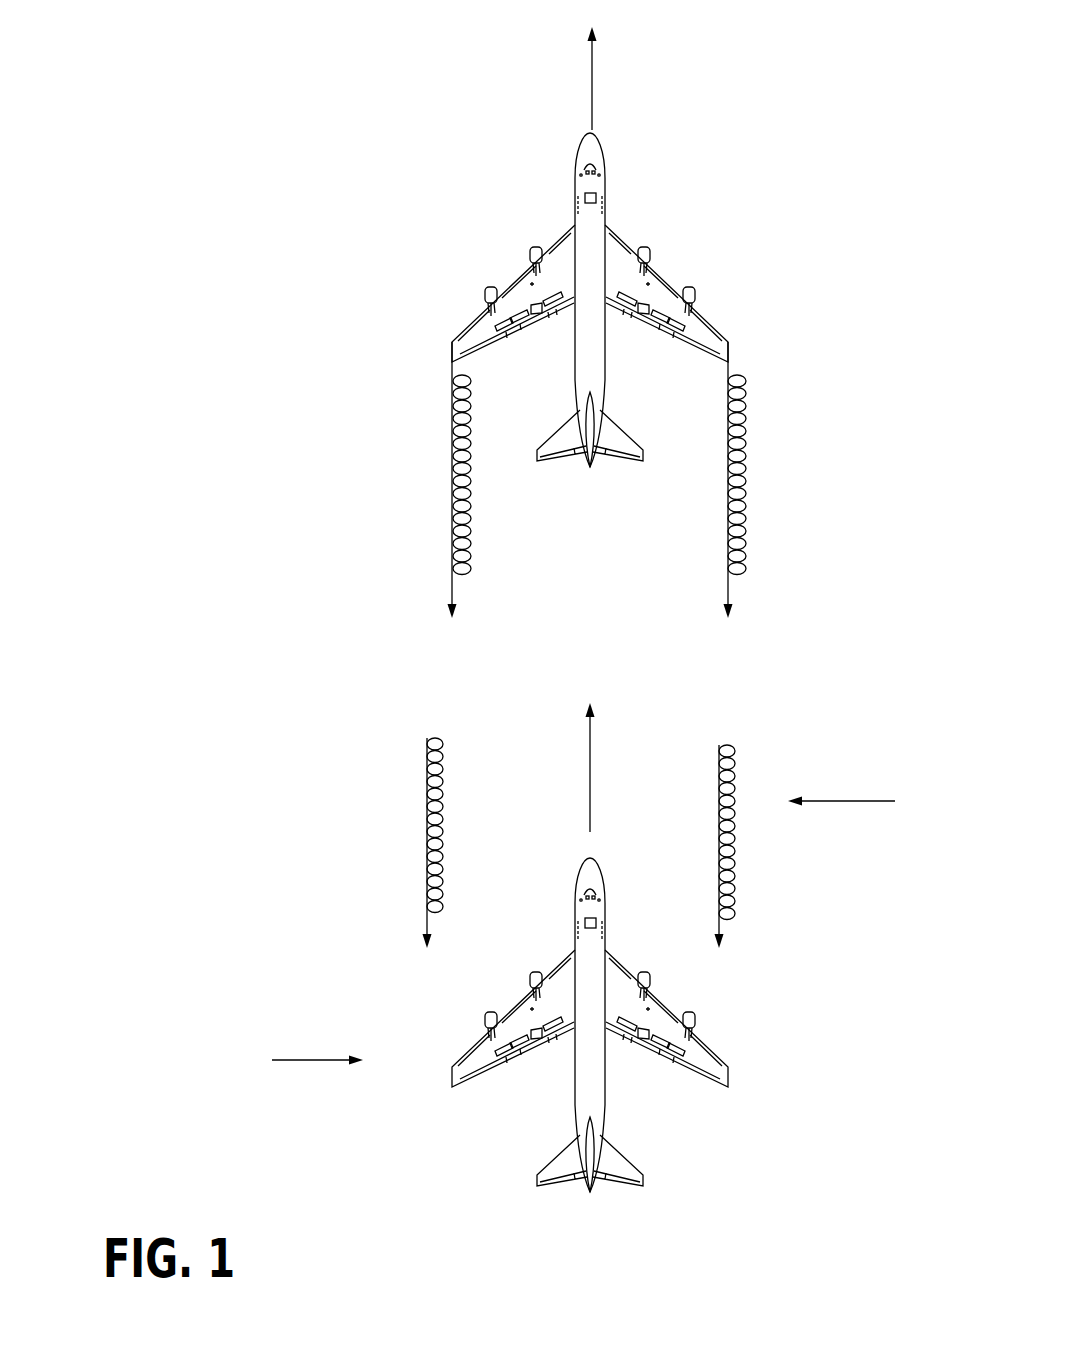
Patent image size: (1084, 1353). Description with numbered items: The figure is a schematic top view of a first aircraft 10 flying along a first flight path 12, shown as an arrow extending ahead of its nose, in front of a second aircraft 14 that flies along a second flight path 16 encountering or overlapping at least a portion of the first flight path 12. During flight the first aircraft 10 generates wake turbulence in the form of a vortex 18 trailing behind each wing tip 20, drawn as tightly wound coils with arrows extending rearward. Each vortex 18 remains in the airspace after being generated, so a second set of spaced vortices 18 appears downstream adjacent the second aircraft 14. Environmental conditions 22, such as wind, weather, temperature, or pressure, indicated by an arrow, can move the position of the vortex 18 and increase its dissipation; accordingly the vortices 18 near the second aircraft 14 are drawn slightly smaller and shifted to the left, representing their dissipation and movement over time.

The first aircraft 10 is at (486, 174).
The first flight path 12 is at (592, 77).
The second aircraft 14 is at (301, 1060).
The second flight path 16 is at (592, 765).
The vortex 18 is at (747, 458).
The wing tip 20 is at (452, 352).
The environmental conditions 22 is at (848, 801).